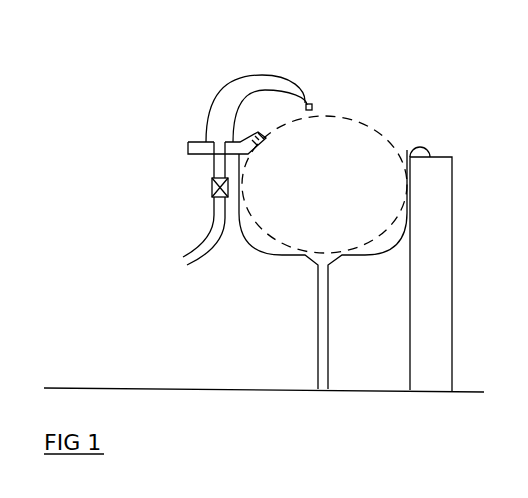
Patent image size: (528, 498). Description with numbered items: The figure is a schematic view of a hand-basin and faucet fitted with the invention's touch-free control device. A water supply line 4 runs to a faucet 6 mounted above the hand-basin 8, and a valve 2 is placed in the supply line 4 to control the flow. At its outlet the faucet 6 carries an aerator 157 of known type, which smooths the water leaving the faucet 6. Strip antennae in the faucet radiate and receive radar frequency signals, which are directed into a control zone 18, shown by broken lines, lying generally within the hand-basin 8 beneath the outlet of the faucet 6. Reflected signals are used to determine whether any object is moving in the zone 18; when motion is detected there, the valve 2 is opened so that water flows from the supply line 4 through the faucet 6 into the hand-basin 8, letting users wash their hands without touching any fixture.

The valve 2 is at (212, 189).
The water supply line 4 is at (215, 221).
The faucet 6 is at (231, 102).
The hand-basin 8 is at (410, 222).
The control zone 18 is at (367, 124).
The aerator 157 is at (311, 105).